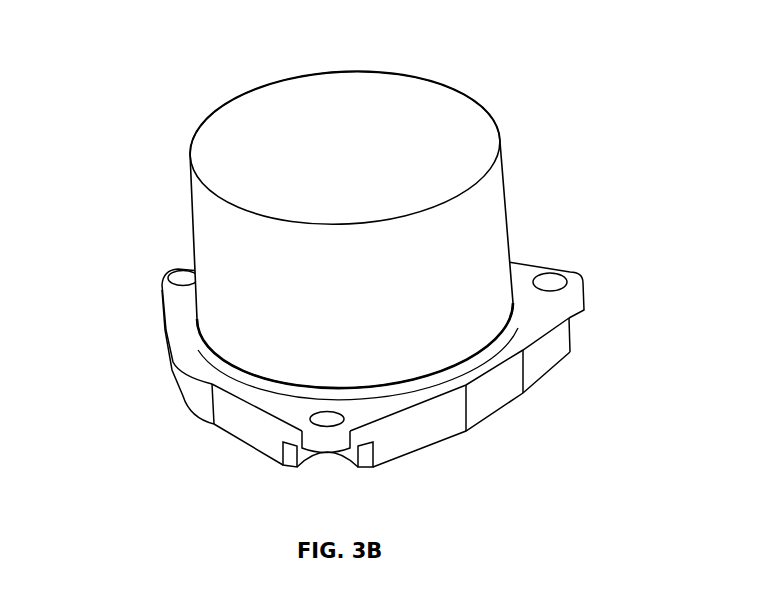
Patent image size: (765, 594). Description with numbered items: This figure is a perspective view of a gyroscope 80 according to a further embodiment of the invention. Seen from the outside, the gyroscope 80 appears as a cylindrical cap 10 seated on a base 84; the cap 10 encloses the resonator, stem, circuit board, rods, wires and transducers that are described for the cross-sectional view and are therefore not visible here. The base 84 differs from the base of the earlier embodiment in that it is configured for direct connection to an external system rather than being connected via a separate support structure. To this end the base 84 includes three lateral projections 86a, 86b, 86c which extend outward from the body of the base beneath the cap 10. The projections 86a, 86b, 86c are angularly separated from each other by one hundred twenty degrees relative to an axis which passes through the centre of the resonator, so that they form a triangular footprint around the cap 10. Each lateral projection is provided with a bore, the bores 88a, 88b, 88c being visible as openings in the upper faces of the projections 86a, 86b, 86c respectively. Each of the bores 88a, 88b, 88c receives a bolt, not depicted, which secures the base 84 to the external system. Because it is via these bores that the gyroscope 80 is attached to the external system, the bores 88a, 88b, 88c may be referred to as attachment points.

The gyroscope 80 is at (135, 47).
The cap 10 is at (417, 108).
The base 84 is at (205, 395).
The lateral projection 86a is at (167, 273).
The lateral projection 86b is at (574, 276).
The lateral projection 86c is at (303, 417).
The bore 88a is at (175, 275).
The bore 88b is at (552, 280).
The bore 88c is at (327, 425).